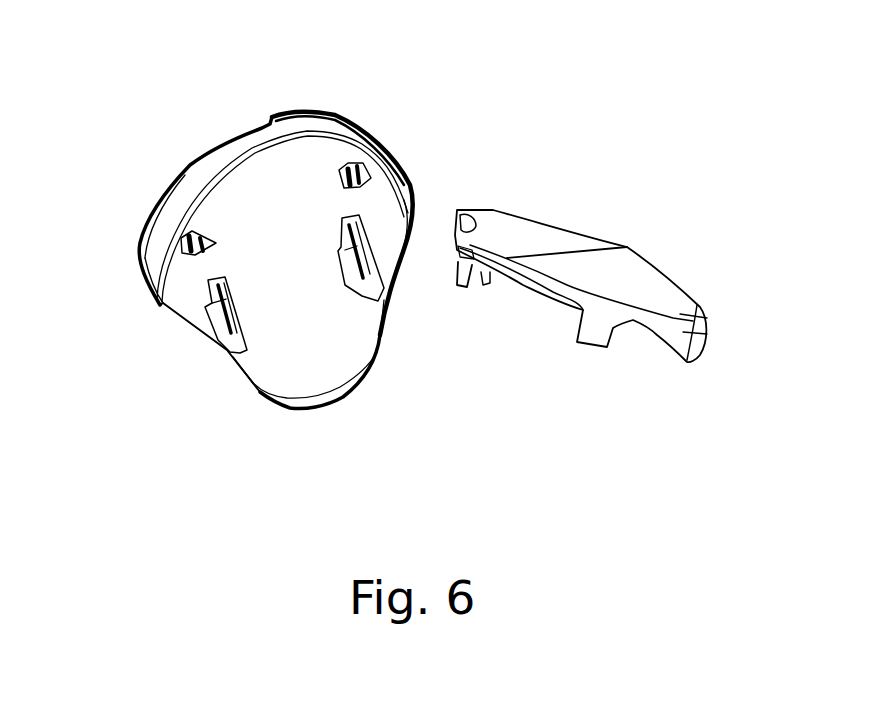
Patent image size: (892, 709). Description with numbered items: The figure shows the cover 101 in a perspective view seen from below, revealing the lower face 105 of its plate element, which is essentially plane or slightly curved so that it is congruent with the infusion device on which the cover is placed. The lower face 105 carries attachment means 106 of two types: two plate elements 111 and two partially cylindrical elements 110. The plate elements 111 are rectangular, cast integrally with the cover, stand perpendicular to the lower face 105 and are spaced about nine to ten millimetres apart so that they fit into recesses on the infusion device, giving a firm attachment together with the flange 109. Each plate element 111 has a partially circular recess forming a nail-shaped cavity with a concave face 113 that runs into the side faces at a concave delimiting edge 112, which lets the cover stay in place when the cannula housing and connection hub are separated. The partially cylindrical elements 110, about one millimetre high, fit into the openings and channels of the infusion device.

The ring assembly 101 is at (408, 136).
The lower face 105 is at (350, 343).
The attachment means 106 is at (203, 160).
The rim side wall 109 is at (406, 197).
The partially cylindrical elements 110 is at (213, 103).
The plate elements 111 is at (293, 437).
The concave delimiting edge 112 is at (208, 285).
The concave face 113 is at (383, 290).